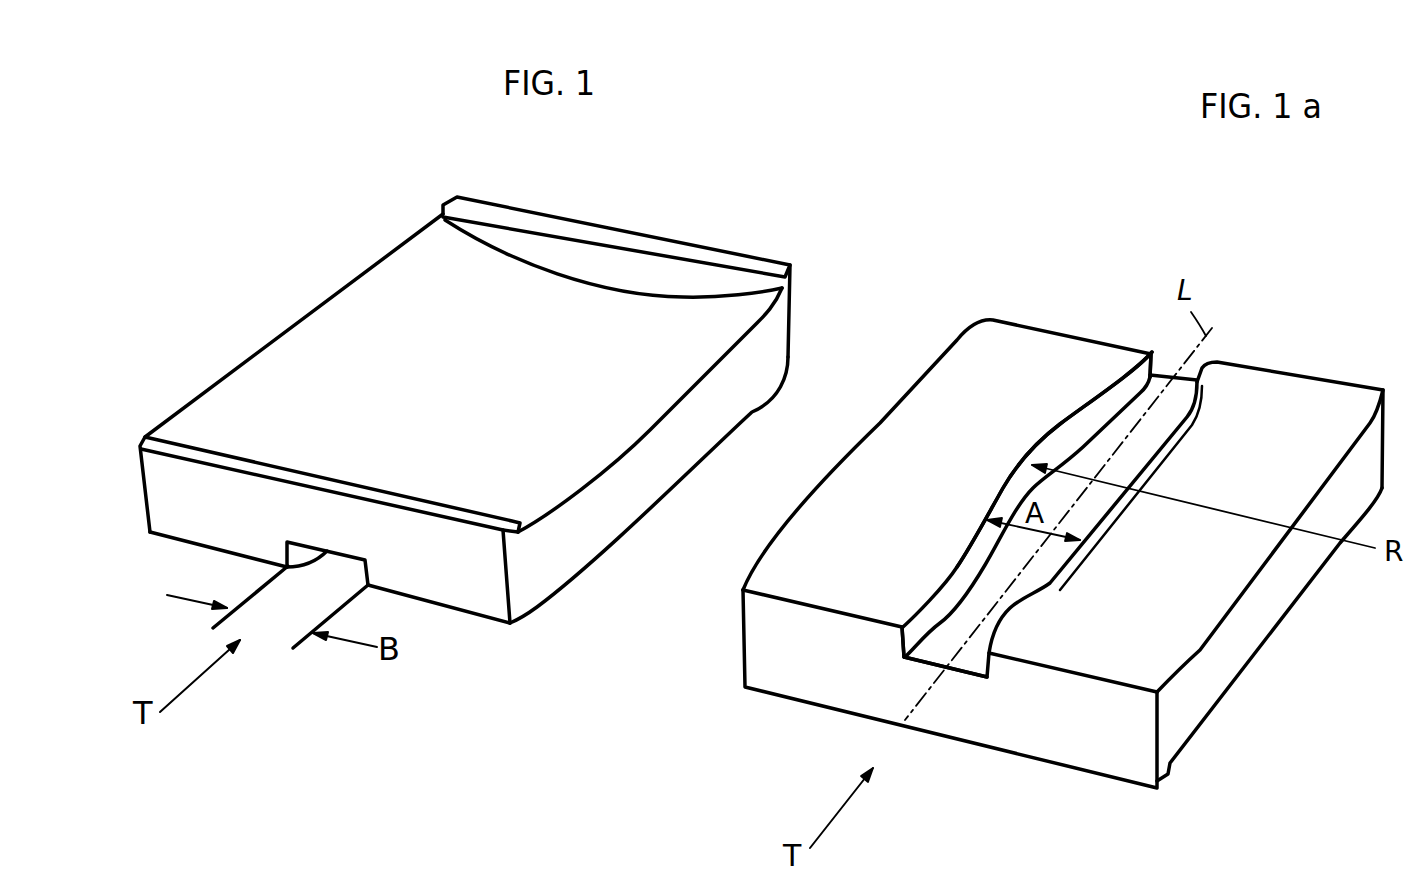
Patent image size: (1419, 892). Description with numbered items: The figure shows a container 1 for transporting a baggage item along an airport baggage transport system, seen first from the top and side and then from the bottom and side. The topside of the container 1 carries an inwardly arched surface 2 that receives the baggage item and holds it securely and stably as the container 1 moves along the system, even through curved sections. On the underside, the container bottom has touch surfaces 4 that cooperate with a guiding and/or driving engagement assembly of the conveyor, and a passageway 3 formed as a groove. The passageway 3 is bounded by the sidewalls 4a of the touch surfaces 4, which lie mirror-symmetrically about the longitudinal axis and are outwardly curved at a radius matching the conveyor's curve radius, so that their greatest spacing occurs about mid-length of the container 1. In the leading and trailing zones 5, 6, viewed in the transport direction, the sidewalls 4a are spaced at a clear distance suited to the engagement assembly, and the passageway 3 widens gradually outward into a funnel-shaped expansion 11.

In FIG. 1, the container 1 is at (693, 163).
In FIG. 1a, the container 1 is at (1233, 293).
In FIG. 1, the inwardly arched surface 2 is at (470, 388).
In FIG. 1a, the passageway 3 is at (1063, 562).
In FIG. 1a, the touch surfaces 4 is at (1057, 426).
In FIG. 1a, the sidewalls 4a is at (1003, 490).
In FIG. 1a, the leading zone 5 is at (915, 628).
In FIG. 1a, the trailing zone 6 is at (1142, 371).
In FIG. 1a, the funnel-shaped expansion 11 is at (903, 656).